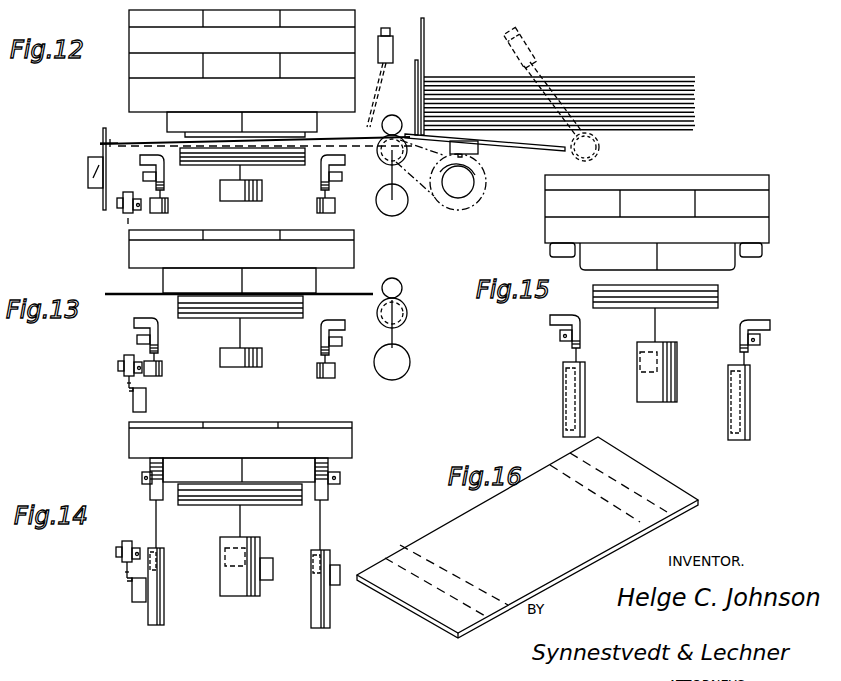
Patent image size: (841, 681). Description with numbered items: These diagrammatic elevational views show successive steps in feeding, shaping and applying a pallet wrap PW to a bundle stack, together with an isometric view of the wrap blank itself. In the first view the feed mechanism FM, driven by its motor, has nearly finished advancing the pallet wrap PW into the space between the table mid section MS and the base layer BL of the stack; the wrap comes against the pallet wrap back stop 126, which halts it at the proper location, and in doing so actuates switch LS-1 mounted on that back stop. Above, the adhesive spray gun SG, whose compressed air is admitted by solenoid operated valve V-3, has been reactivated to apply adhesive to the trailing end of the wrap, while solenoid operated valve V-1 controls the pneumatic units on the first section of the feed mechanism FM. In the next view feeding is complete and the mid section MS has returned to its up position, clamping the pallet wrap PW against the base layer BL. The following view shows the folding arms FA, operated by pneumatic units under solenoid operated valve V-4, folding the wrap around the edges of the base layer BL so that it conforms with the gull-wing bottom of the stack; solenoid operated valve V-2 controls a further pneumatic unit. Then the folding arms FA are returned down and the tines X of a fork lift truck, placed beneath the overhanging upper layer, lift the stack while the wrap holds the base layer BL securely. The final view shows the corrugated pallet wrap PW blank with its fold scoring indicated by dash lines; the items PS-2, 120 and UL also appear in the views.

In FIG. 12, the base layer BL is at (160, 115).
In FIG. 13, the base layer BL is at (318, 284).
In FIG. 15, the base layer BL is at (720, 270).
In FIG. 12, the pallet wrap PW is at (125, 142).
In FIG. 13, the pallet wrap PW is at (115, 292).
In FIG. 14, the pallet wrap PW is at (318, 494).
In FIG. 15, the pallet wrap PW is at (606, 270).
In FIG. 16, the pallet wrap PW is at (457, 522).
In FIG. 12, the pallet wrap back stop 126 is at (102, 140).
In FIG. 12, the switch LS-1 is at (92, 173).
In FIG. 12, the pressure switch PS-2 is at (126, 222).
In FIG. 13, the pressure switch PS-2 is at (130, 391).
In FIG. 14, the pressure switch PS-2 is at (135, 597).
In FIG. 12, the mid section MS is at (270, 172).
In FIG. 13, the mid section MS is at (268, 325).
In FIG. 14, the mid section MS is at (262, 508).
In FIG. 15, the mid section MS is at (684, 308).
In FIG. 12, the solenoid operated valve V-3 is at (389, 28).
In FIG. 12, the adhesive spray gun SG is at (395, 42).
In FIG. 12, the solenoid operated valve V-1 is at (515, 32).
In FIG. 12, the roller 120 is at (470, 188).
In FIG. 12, the upper layer / stack UL is at (545, 203).
In FIG. 15, the upper layer / stack UL is at (657, 209).
In FIG. 12, the feed mechanism FM is at (417, 202).
In FIG. 13, the feed mechanism FM is at (412, 336).
In FIG. 14, the folding arms FA is at (150, 490).
In FIG. 15, the folding arms FA is at (551, 314).
In FIG. 14, the solenoid operated valve V-2 is at (273, 580).
In FIG. 14, the solenoid operated valve V-4 is at (335, 585).
In FIG. 15, the tines X is at (550, 250).